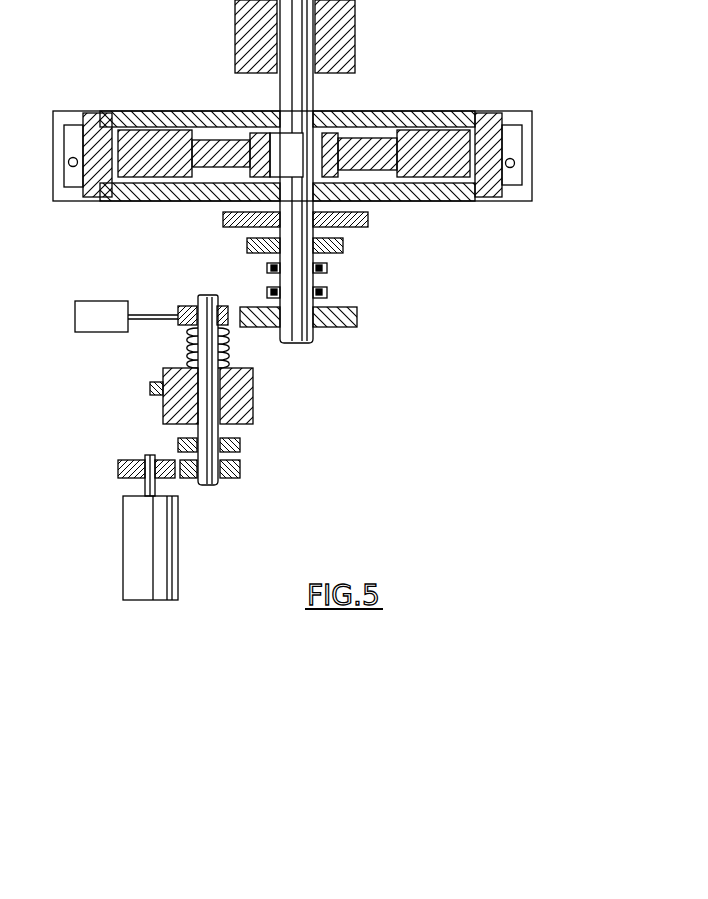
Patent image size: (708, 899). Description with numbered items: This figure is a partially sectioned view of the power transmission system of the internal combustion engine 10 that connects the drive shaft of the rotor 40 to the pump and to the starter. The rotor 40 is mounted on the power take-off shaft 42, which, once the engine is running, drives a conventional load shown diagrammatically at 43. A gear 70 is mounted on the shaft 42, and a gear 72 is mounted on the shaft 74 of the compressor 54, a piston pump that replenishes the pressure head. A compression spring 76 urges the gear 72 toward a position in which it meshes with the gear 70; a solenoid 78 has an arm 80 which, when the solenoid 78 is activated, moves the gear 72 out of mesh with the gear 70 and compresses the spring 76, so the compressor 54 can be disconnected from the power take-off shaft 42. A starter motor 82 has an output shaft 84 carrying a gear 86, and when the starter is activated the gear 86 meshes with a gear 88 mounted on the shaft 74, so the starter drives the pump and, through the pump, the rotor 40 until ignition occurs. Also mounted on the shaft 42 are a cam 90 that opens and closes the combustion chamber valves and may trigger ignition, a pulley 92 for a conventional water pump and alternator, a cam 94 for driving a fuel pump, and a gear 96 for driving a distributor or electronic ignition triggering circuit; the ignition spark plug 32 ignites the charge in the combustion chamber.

The internal combustion engine 10 is at (122, 99).
The ignition spark plug 32 is at (68, 162).
The rotor 40 is at (183, 137).
The power take-off shaft 42 is at (280, 94).
The load 43 is at (355, 33).
The cam 90 is at (369, 217).
The pulley 92 is at (330, 253).
The cam 94 is at (328, 268).
The gear 96 is at (328, 291).
The gear 70 is at (342, 327).
The gear 72 is at (183, 305).
The shaft of the pump 74 is at (202, 428).
The compression spring 76 is at (185, 352).
The compressor 54 is at (253, 392).
The solenoid 78 is at (83, 317).
The arm 80 is at (148, 315).
The gear 86 is at (118, 465).
The gear 88 is at (229, 478).
The output shaft 84 is at (143, 488).
The starter motor 82 is at (167, 558).